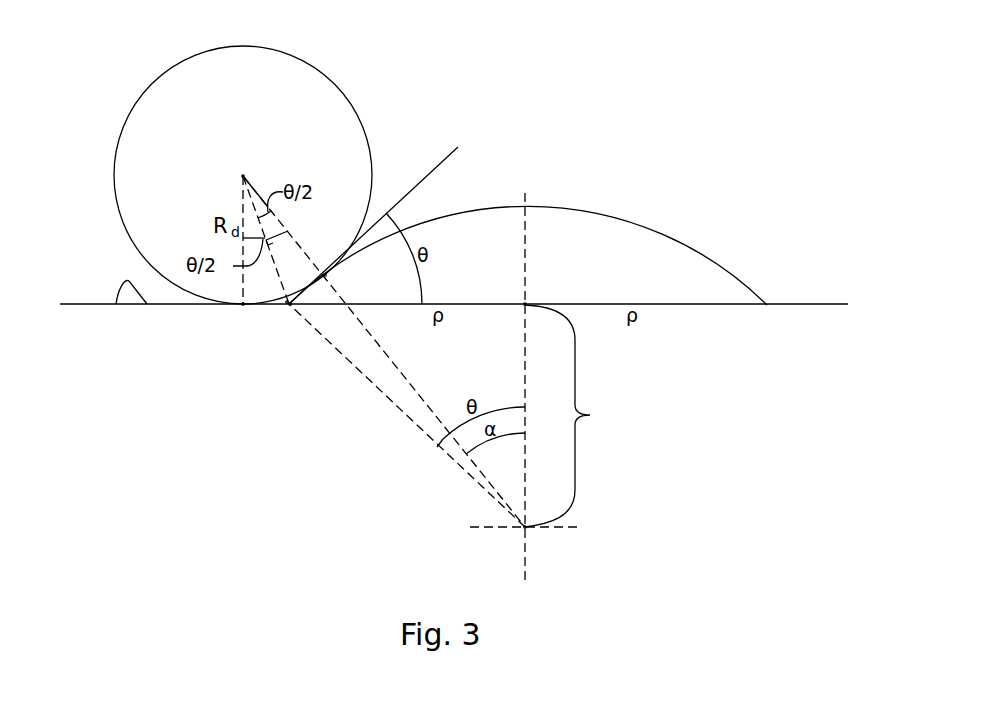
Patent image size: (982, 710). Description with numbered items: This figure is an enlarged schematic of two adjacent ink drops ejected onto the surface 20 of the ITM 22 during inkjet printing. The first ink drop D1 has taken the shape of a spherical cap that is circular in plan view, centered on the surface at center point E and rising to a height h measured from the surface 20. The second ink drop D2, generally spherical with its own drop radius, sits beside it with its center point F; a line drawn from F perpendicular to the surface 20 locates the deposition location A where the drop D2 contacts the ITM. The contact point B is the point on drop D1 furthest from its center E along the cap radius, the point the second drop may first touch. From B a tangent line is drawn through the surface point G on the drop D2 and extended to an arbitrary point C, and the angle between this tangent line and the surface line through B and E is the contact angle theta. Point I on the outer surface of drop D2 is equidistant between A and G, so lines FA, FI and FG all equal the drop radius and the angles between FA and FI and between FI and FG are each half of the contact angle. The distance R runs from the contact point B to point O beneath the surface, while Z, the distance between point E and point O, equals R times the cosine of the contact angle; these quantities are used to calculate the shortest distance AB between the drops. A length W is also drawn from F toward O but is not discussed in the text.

The surface 20 is at (444, 317).
The ITM 22 is at (116, 304).
The first ink drop D1 is at (668, 235).
The second ink drop D2 is at (327, 77).
The arbitrary point C is at (382, 215).
The distance W is at (406, 380).
The distance from contact point B to point O R is at (384, 396).
The height of the ink drop h is at (534, 388).
The center point F is at (244, 177).
The surface point G is at (328, 273).
The deposition location A is at (243, 318).
The equidistant point I is at (287, 302).
The contact point B is at (294, 305).
The center point E is at (525, 305).
The point O is at (535, 539).
The distance between point E and point O Z is at (567, 416).